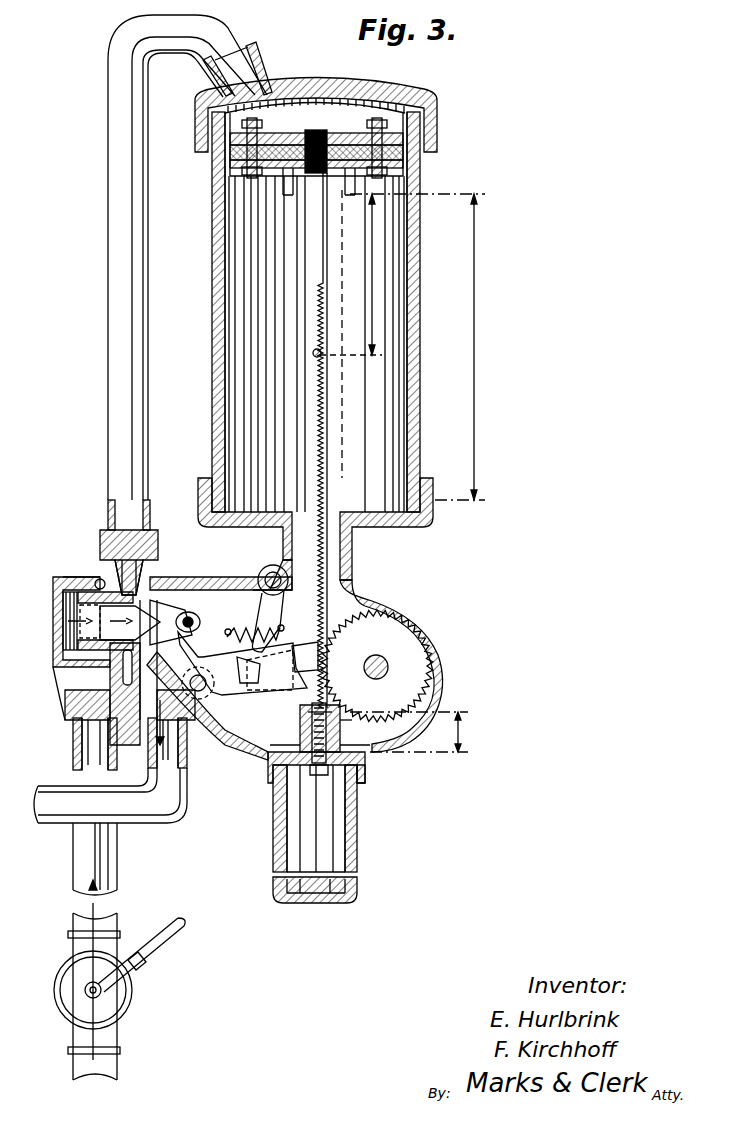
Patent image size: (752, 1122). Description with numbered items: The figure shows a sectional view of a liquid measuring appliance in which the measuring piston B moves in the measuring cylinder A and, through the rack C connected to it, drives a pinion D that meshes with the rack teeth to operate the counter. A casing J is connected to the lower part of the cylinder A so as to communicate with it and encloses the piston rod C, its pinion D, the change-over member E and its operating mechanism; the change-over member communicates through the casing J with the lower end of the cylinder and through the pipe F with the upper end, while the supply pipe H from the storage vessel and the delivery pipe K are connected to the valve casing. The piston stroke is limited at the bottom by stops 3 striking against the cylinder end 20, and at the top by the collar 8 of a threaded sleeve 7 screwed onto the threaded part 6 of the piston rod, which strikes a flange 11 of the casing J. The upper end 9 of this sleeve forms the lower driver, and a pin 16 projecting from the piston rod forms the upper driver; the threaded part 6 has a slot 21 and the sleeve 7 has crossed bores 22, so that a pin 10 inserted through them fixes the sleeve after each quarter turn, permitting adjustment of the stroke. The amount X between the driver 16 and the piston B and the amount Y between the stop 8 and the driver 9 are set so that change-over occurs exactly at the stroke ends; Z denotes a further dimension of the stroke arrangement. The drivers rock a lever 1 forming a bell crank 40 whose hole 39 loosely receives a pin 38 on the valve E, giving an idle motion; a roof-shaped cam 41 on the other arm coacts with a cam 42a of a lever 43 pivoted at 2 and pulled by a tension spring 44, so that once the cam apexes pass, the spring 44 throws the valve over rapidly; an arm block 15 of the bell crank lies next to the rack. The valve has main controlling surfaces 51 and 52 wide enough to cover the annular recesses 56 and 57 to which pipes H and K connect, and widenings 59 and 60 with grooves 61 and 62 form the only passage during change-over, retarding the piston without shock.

The measuring cylinder A is at (212, 246).
The measuring piston B is at (360, 145).
The rack C is at (326, 466).
The pinion D is at (405, 645).
The change-over member E is at (55, 652).
The pipe F is at (108, 270).
The supply pipe H is at (73, 846).
The casing J is at (245, 745).
The pipe K is at (165, 810).
The amount X is at (351, 274).
The amount Y is at (409, 732).
The dimension Z is at (417, 347).
The lever 1 is at (205, 672).
The pivot 2 is at (273, 572).
The stops 3 is at (290, 192).
The threaded part 6 is at (365, 780).
The threaded sleeve 7 is at (342, 722).
The collar 8 is at (273, 790).
The upper end of sleeve 9 is at (330, 715).
The pin 10 is at (365, 760).
The flange 11 is at (320, 728).
The lever arm block 15 is at (320, 661).
The driving pin 16 is at (321, 352).
The cylinder end 20 is at (345, 512).
The slot 21 is at (320, 775).
The crossed bores 22 is at (337, 733).
The pin 38 is at (192, 617).
The hole 39 is at (173, 617).
The bell crank 40 is at (210, 690).
The cam 41 is at (250, 683).
The cam 42a is at (275, 690).
The lever 43 is at (258, 574).
The tension spring 44 is at (240, 634).
The main controlling surface 51 is at (90, 600).
The main controlling surface 52 is at (114, 623).
The annular recess 56 is at (118, 578).
The annular recess 57 is at (160, 580).
The widening surface 59 is at (66, 618).
The widening surface 60 is at (90, 622).
The groove-like recess 61 is at (80, 582).
The groove-like recess 62 is at (100, 582).